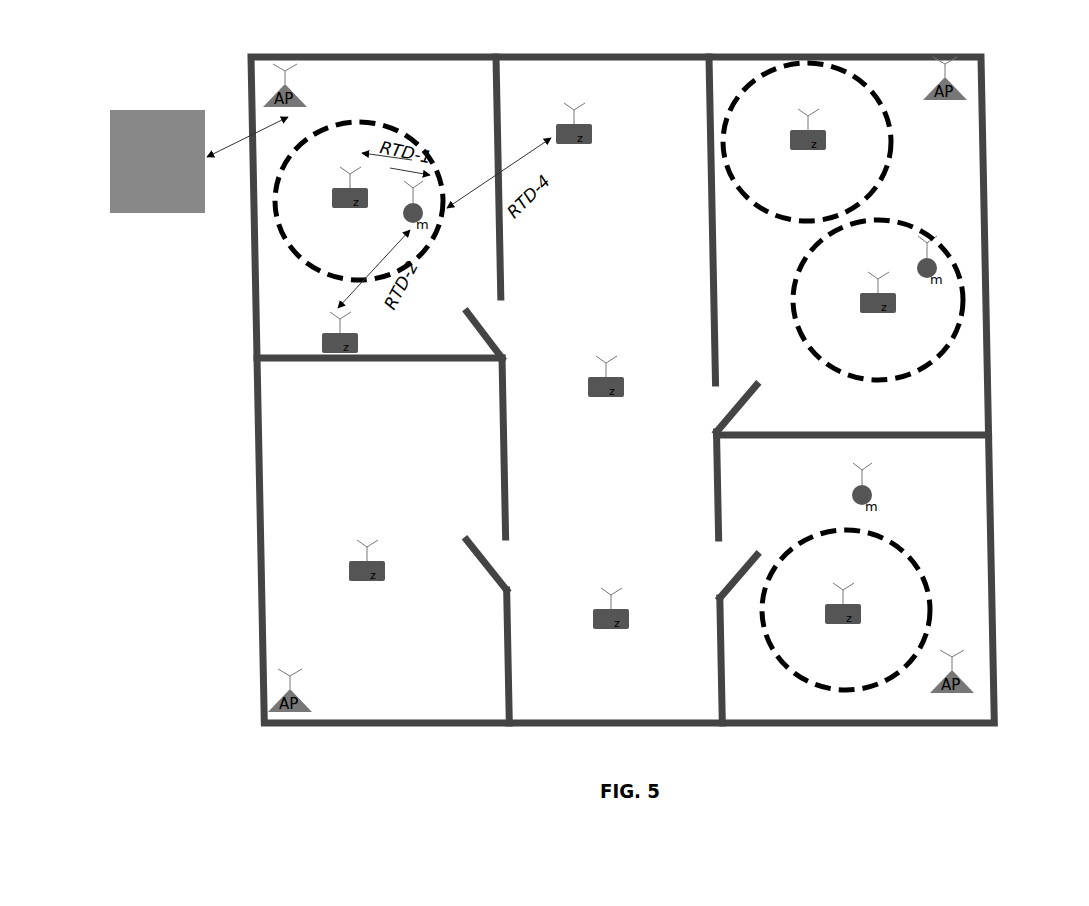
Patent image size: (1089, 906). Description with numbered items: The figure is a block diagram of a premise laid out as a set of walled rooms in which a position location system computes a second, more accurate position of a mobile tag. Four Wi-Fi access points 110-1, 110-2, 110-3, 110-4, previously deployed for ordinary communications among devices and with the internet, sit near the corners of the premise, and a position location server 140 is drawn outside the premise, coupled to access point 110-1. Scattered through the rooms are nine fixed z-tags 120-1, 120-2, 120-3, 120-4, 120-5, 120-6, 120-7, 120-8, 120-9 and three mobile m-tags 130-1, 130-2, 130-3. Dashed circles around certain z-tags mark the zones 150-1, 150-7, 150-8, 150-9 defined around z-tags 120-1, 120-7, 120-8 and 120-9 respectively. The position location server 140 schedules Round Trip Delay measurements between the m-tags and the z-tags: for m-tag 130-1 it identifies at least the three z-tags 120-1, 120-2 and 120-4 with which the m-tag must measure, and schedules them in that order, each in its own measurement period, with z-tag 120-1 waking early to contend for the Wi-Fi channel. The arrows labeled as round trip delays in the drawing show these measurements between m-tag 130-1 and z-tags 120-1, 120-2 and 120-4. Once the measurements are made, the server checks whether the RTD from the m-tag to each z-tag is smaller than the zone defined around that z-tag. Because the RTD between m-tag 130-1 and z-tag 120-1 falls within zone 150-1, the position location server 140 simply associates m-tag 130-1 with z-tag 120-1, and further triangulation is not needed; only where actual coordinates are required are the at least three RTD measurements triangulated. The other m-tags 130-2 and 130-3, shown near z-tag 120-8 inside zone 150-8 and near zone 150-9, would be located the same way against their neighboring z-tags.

The position location server 140 is at (170, 107).
The access point 110-1 is at (277, 93).
The access point 110-2 is at (933, 93).
The access point 110-3 is at (270, 702).
The access point 110-4 is at (965, 685).
The z-tag 120-1 is at (333, 192).
The z-tag 120-2 is at (322, 338).
The z-tag 120-3 is at (349, 572).
The z-tag 120-4 is at (556, 136).
The z-tag 120-5 is at (588, 388).
The z-tag 120-6 is at (593, 619).
The z-tag 120-7 is at (790, 138).
The z-tag 120-8 is at (860, 302).
The z-tag 120-9 is at (825, 617).
The m-tag 130-1 is at (423, 223).
The m-tag 130-2 is at (918, 263).
The m-tag 130-3 is at (853, 490).
The zone 150-1 is at (278, 242).
The zone 150-7 is at (892, 123).
The zone 150-8 is at (963, 302).
The zone 150-9 is at (846, 610).